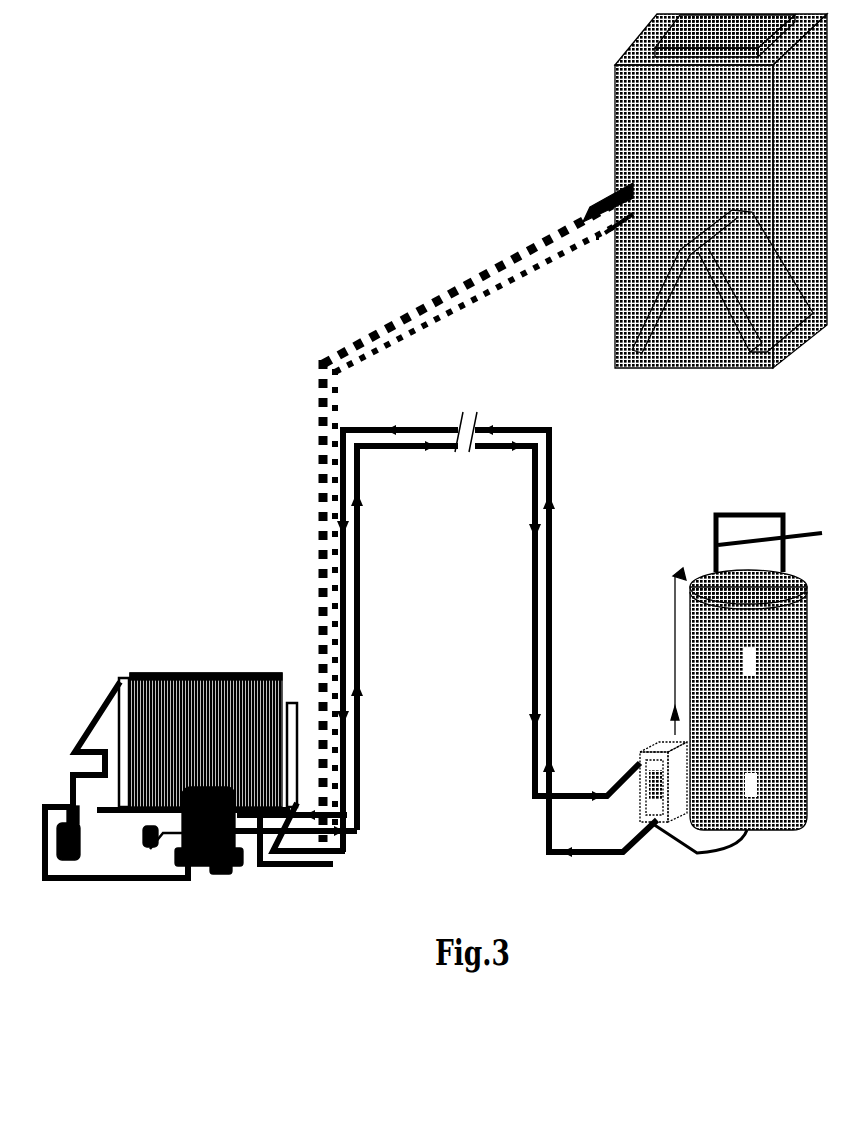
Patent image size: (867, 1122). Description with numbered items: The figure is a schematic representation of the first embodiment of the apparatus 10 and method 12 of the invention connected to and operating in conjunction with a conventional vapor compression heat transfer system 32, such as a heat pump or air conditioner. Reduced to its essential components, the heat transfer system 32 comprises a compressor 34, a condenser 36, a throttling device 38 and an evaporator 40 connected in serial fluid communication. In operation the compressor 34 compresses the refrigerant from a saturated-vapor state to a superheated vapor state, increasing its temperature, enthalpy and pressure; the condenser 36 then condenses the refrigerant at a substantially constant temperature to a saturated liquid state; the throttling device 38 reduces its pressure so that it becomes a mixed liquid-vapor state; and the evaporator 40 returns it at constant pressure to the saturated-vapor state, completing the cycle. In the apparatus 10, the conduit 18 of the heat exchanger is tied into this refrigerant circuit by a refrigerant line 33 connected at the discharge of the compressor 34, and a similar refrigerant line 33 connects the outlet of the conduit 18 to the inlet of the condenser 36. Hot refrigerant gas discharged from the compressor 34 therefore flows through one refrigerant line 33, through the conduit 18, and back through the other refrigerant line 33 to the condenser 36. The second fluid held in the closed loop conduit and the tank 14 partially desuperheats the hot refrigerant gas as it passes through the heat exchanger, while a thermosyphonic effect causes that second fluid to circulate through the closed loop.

The apparatus 10 is at (699, 585).
The method 12 is at (699, 585).
The tank 14 is at (739, 699).
The conduit 18 is at (684, 808).
The vapor compression heat transfer system 32 is at (506, 305).
The refrigerant line 33 is at (497, 634).
The compressor 34 is at (266, 830).
The condenser 36 is at (195, 775).
The throttling device 38 is at (494, 512).
The evaporator 40 is at (722, 281).